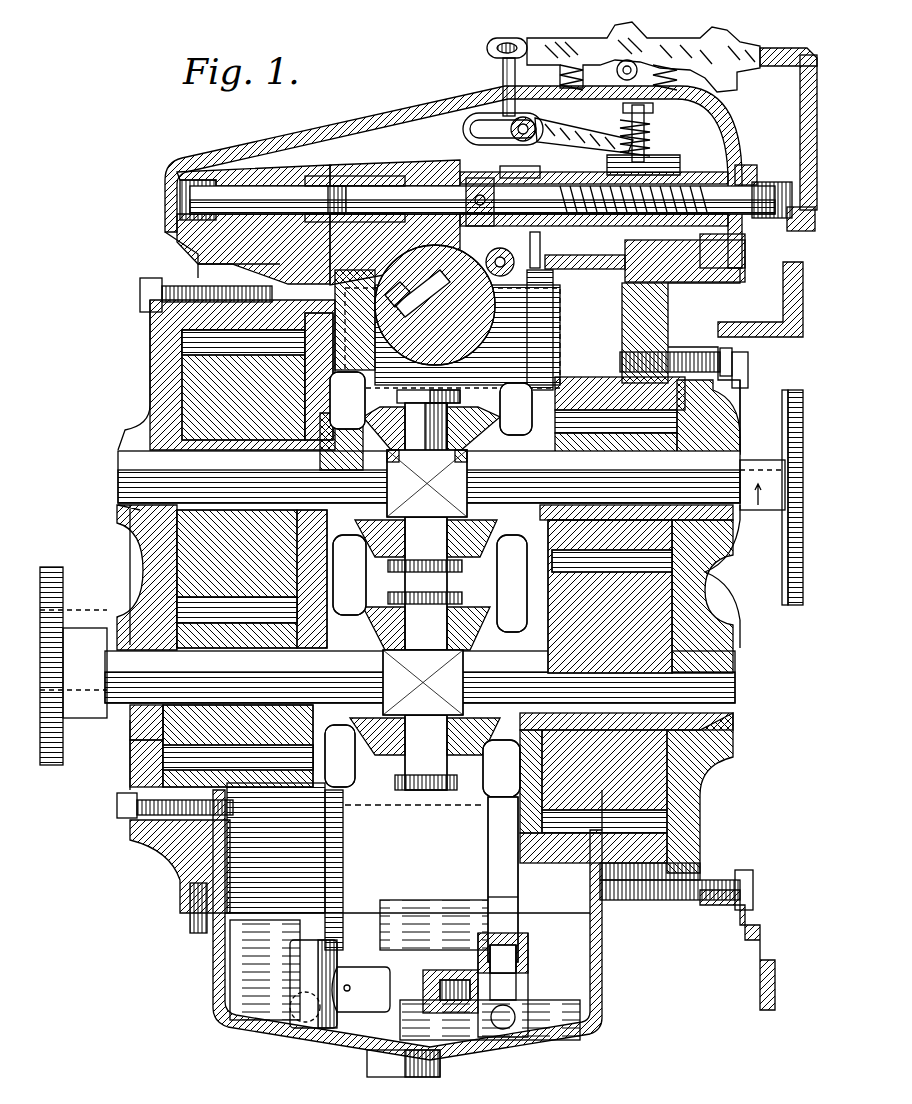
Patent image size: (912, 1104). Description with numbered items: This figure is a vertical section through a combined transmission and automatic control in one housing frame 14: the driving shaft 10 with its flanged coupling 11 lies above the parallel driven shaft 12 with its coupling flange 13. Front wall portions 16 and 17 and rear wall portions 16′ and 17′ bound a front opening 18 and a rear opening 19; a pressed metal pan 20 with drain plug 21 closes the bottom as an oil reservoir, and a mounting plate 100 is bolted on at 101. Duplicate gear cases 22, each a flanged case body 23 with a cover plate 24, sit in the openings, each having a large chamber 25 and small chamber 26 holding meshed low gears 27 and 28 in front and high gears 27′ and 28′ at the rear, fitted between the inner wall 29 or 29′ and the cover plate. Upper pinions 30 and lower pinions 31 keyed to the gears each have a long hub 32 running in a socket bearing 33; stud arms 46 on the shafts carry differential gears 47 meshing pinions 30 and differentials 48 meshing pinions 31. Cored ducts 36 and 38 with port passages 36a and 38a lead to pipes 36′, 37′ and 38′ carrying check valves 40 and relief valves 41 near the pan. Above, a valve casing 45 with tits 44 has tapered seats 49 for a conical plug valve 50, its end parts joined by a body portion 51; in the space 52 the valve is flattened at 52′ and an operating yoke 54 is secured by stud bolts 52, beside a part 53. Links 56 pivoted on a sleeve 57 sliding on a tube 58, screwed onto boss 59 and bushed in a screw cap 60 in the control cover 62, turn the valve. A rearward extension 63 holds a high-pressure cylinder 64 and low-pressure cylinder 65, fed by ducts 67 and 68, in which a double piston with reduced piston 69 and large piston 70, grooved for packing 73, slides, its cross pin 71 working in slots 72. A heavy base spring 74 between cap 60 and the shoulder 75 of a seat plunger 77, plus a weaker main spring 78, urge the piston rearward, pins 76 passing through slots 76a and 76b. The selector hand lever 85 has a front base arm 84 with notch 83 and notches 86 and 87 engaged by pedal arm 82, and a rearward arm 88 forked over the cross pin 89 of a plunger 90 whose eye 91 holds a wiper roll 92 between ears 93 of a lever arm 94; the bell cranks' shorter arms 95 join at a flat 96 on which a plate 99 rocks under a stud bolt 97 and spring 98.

The driving shaft 10 is at (717, 485).
The flanged coupling 11 is at (793, 604).
The driven shaft 12 is at (198, 678).
The coupling flange 13 is at (50, 760).
The housing frame 14 is at (185, 878).
The upper wall portion 16 is at (660, 322).
The lower wall portion 16′ is at (185, 898).
The lower wall portion 17 is at (690, 861).
The upper wall portion 17′ is at (200, 310).
The front opening 18 is at (710, 378).
The rear opening 19 is at (182, 855).
The pressed metal pan 20 is at (270, 1048).
The drain plug 21 is at (365, 1066).
The gear cases 22 is at (520, 822).
The case body 23 is at (250, 815).
The cover plate 24 is at (160, 362).
The large circular chamber 25 is at (710, 836).
The small chamber 26 is at (718, 430).
The low gear 27 is at (630, 580).
The high gear 27′ is at (222, 577).
The low gear 28 is at (620, 415).
The high gear 28′ is at (221, 746).
The inner wall 29 is at (528, 590).
The bearing race 29′ is at (265, 592).
The upper pinions 30 is at (436, 509).
The lower pinions 31 is at (362, 668).
The long hub 32 is at (422, 577).
The socket bearing 33 is at (130, 512).
The cored duct 36 is at (428, 584).
The pipe 36′ is at (495, 848).
The port passage 36a is at (560, 350).
The pipe 37′ is at (525, 938).
The cored duct 38 is at (345, 870).
The pipe 38′ is at (340, 862).
The port passage 38a is at (326, 303).
The check valves 40 is at (295, 992).
The pressure relief valves 41 is at (428, 985).
The depending tits 44 is at (315, 360).
The valve casing 45 is at (556, 322).
The stud arms 46 is at (410, 440).
The differential gears 47 is at (410, 482).
The differentials 48 is at (425, 681).
The plug valve seats 49 is at (406, 303).
The conical plug valve 50 is at (355, 320).
The upper rearward body portion 51 is at (270, 190).
The space between end parts 52 is at (441, 329).
The flattened portion 52′ is at (519, 353).
The cam 53 is at (376, 268).
The operating yoke 54 is at (604, 310).
The operating links 56 is at (594, 293).
The sleeve 57 is at (645, 261).
The horizontal tube 58 is at (392, 176).
The threaded boss 59 is at (385, 186).
The screw cap 60 is at (745, 176).
The control casing 62 is at (388, 118).
The rearward extension 63 is at (190, 170).
The high pressure cylinder 64 is at (250, 190).
The low-pressure cylinder 65 is at (320, 185).
The duct 67 is at (178, 245).
The duct 68 is at (292, 180).
The reduced piston 69 is at (345, 186).
The large piston 70 is at (430, 186).
The cross pin 71 is at (480, 202).
The slots 72 is at (456, 186).
The packing 73 is at (280, 180).
The base spring 74 is at (738, 246).
The shoulder 75 is at (520, 254).
The pins 76 is at (572, 270).
The long slots 76a is at (537, 192).
The slots 76b is at (509, 210).
The seat plunger 77 is at (772, 193).
The main spring 78 is at (541, 225).
The pedal arm 82 is at (803, 132).
The notched extremity 83 is at (788, 49).
The front base arm 84 is at (689, 55).
The selector hand lever 85 is at (632, 38).
The reverse notch 86 is at (722, 40).
The forward notch 87 is at (722, 70).
The base rearward arm 88 is at (552, 42).
The cross pin 89 is at (510, 38).
The plunger 90 is at (503, 64).
The elongated eye 91 is at (490, 84).
The wiper roll 92 is at (503, 129).
The ears 93 is at (538, 122).
The lever arm 94 is at (584, 132).
The shorter arms 95 is at (690, 160).
The flat 96 is at (682, 152).
The stud bolt 97 is at (618, 75).
The spring 98 is at (650, 114).
The plate 99 is at (672, 138).
The mounting plate 100 is at (760, 930).
The nuts 101 is at (750, 372).